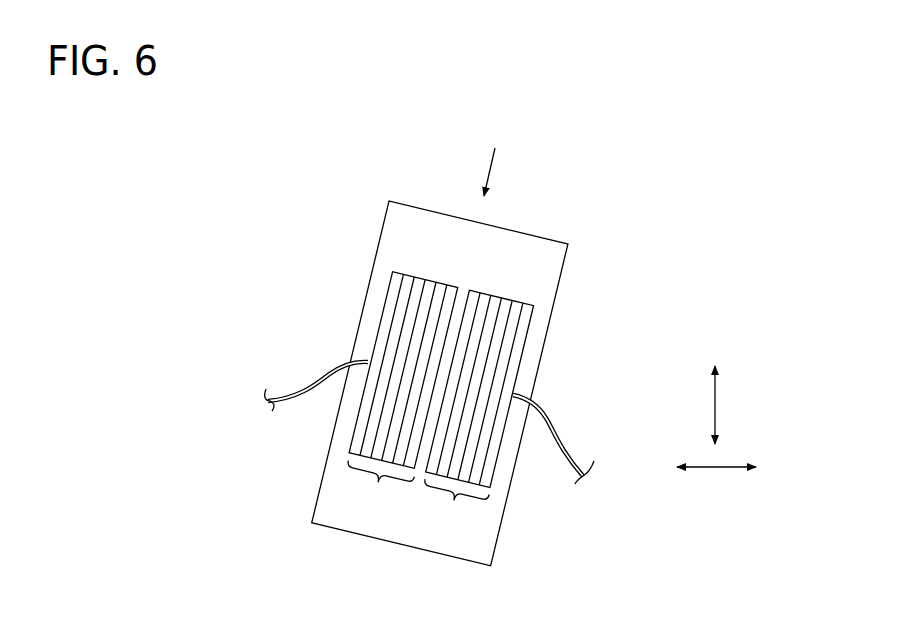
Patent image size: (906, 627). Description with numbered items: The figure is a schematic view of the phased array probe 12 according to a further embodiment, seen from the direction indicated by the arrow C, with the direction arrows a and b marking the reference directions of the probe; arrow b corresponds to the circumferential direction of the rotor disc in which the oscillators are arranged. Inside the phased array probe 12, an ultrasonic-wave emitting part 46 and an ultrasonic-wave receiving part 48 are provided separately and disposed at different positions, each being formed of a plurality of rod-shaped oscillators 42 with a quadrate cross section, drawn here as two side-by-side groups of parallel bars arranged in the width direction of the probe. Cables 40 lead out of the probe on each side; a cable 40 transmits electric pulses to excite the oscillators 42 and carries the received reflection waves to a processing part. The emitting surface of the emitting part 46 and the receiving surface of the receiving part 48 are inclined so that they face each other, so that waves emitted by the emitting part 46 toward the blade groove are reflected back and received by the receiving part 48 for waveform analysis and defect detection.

The phased array probe 12 is at (550, 328).
The oscillator 42 is at (480, 406).
The ultrasonic-wave emitting part 46 is at (478, 415).
The ultrasonic-wave receiving part 48 is at (402, 397).
The cable 40 is at (307, 385).
The viewing direction C is at (497, 152).
The direction a is at (715, 403).
The direction of arrow b is at (715, 467).